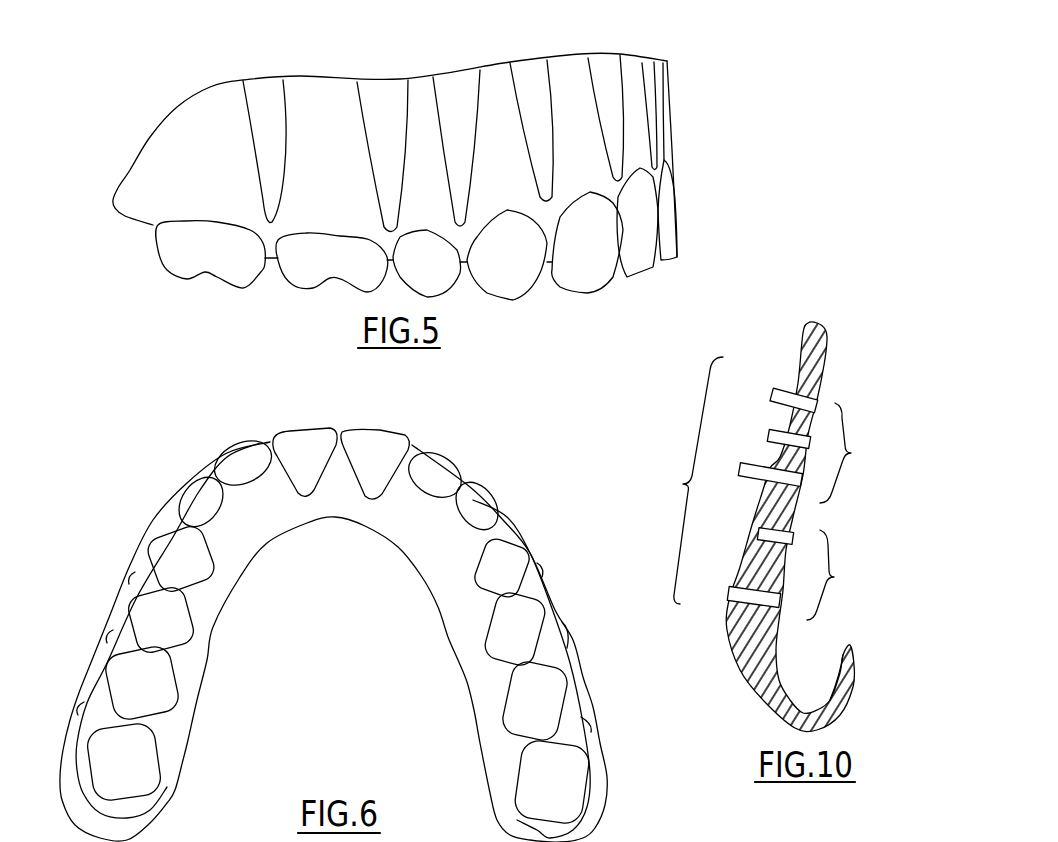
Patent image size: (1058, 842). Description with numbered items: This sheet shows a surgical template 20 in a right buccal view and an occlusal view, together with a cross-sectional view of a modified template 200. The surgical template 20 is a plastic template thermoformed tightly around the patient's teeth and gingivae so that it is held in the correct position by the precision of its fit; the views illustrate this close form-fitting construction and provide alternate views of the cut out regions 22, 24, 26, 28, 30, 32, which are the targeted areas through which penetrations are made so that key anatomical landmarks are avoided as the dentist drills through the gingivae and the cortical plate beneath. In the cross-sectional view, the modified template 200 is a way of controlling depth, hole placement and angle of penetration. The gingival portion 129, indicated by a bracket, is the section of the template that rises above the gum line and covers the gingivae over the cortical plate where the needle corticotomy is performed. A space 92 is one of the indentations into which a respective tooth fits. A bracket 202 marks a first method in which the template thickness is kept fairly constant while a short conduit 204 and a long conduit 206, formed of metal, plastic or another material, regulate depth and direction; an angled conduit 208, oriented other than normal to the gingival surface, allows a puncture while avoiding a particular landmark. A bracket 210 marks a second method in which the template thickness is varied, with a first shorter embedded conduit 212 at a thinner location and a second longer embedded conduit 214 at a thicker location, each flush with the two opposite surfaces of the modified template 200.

In FIG. 5, the surgical template 20 is at (106, 244).
In FIG. 6, the surgical template 20 is at (630, 800).
In FIG. 5, the region 22 is at (265, 98).
In FIG. 5, the region 24 is at (377, 96).
In FIG. 5, the region 26 is at (458, 90).
In FIG. 5, the region 28 is at (528, 78).
In FIG. 5, the region 30 is at (605, 68).
In FIG. 5, the region 32 is at (652, 68).
In FIG. 10, the space 92 is at (812, 682).
In FIG. 10, the gingival portion 129 is at (681, 480).
In FIG. 10, the modified template 200 is at (854, 346).
In FIG. 10, the bracket 202 is at (866, 458).
In FIG. 10, the short conduit 204 is at (770, 434).
In FIG. 10, the long conduit 206 is at (740, 476).
In FIG. 10, the angled conduit 208 is at (773, 389).
In FIG. 10, the bracket 210 is at (852, 580).
In FIG. 10, the first shorter embedded conduit 212 is at (792, 534).
In FIG. 10, the second longer embedded conduit 214 is at (778, 603).